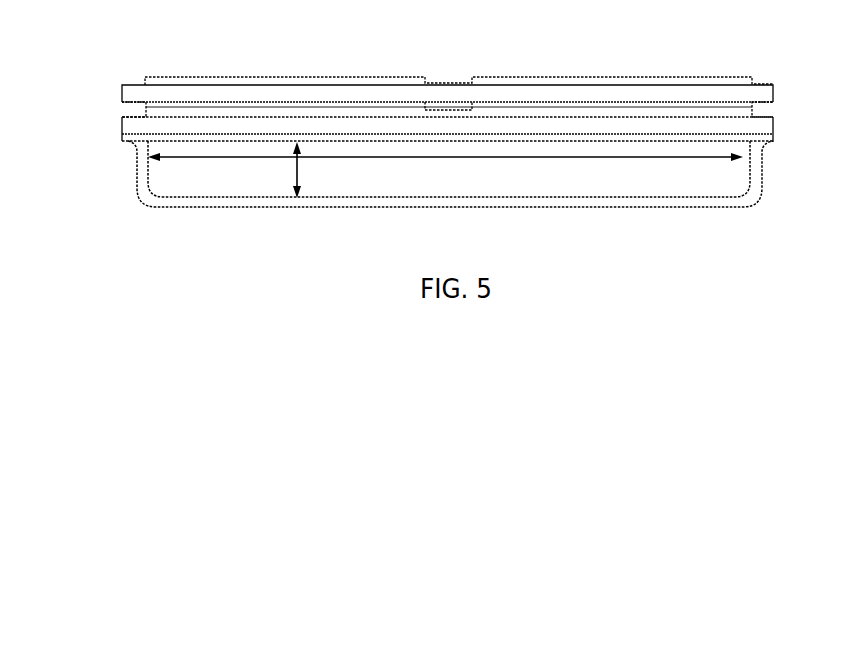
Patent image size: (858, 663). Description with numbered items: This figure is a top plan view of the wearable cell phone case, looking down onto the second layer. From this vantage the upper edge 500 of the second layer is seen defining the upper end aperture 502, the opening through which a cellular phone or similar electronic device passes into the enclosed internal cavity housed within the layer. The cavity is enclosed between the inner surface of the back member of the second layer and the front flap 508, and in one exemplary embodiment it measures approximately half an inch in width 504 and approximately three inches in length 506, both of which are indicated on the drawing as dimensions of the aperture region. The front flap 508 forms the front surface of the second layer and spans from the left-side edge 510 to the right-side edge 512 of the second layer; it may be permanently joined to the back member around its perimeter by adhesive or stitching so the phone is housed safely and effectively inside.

The upper edge 500 is at (454, 75).
The upper end aperture 502 is at (592, 183).
The width 504 is at (297, 180).
The length 506 is at (430, 157).
The front flap 508 is at (156, 199).
The left-side edge 510 is at (114, 119).
The right-side edge 512 is at (784, 135).